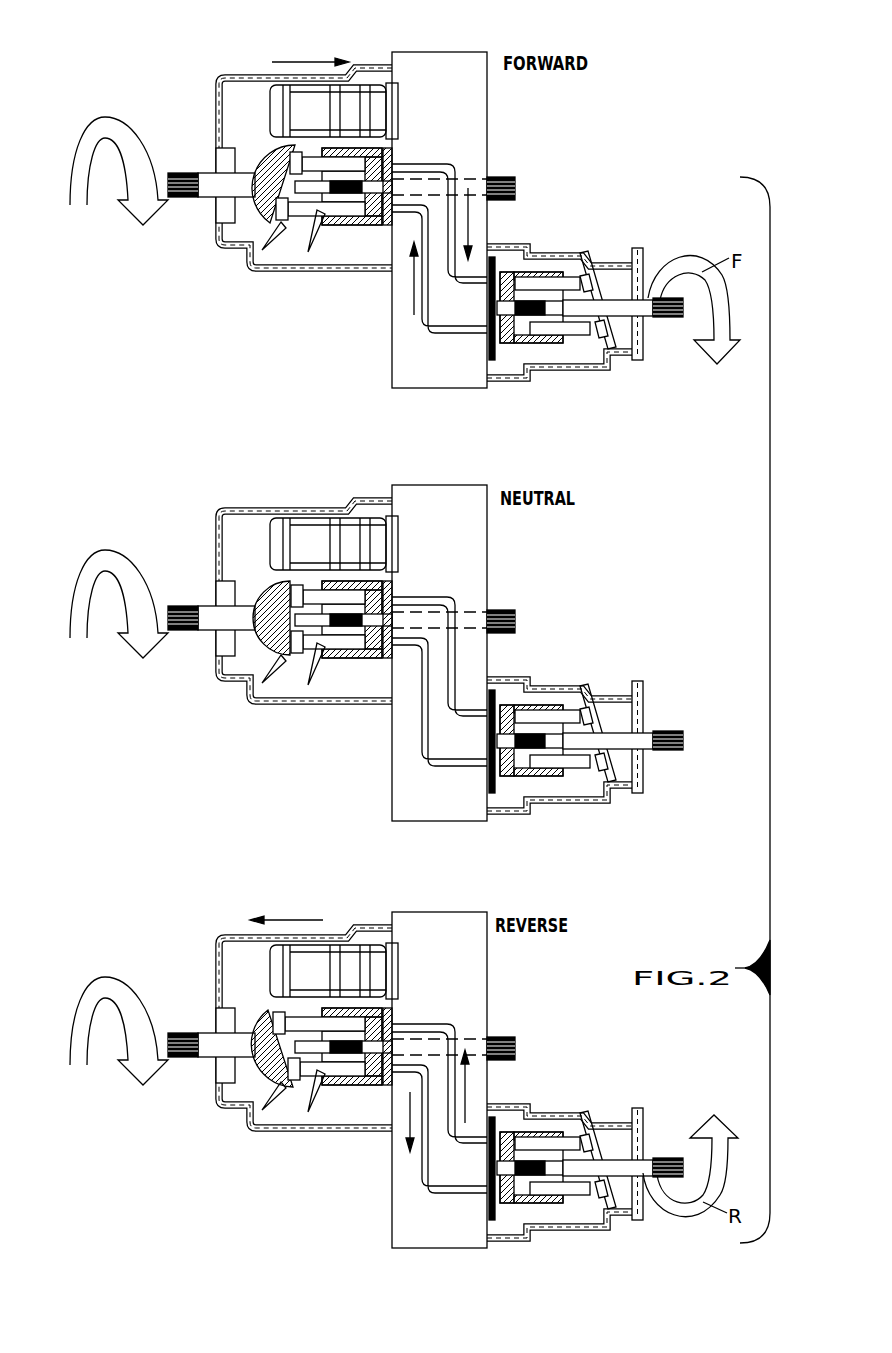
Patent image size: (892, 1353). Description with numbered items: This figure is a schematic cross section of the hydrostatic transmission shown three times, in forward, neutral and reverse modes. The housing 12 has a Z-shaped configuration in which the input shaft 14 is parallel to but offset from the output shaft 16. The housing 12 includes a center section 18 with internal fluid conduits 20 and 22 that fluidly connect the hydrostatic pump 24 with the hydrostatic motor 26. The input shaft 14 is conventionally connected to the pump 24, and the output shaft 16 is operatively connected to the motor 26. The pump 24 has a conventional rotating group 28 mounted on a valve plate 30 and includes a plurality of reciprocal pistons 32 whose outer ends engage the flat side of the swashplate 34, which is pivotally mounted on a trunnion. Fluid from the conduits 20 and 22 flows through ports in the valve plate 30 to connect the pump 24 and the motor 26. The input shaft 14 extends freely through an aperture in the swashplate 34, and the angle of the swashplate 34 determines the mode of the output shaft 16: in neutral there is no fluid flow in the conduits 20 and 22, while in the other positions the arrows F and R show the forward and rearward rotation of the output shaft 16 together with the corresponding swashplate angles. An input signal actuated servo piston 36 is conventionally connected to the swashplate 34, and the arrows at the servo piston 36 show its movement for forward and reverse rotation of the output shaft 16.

The housing 12 is at (310, 270).
The input shaft 14 is at (207, 185).
The output shaft 16 is at (632, 305).
The center section 18 is at (460, 72).
The fluid conduit 20 is at (453, 163).
The fluid conduit 22 is at (428, 323).
The hydrostatic pump 24 is at (280, 227).
The hydrostatic motor 26 is at (568, 243).
The rotating group 28 is at (552, 257).
The valve plate 30 is at (393, 158).
The reciprocal pistons 32 is at (355, 165).
The swashplate 34 is at (273, 150).
The servo piston 36 is at (298, 100).